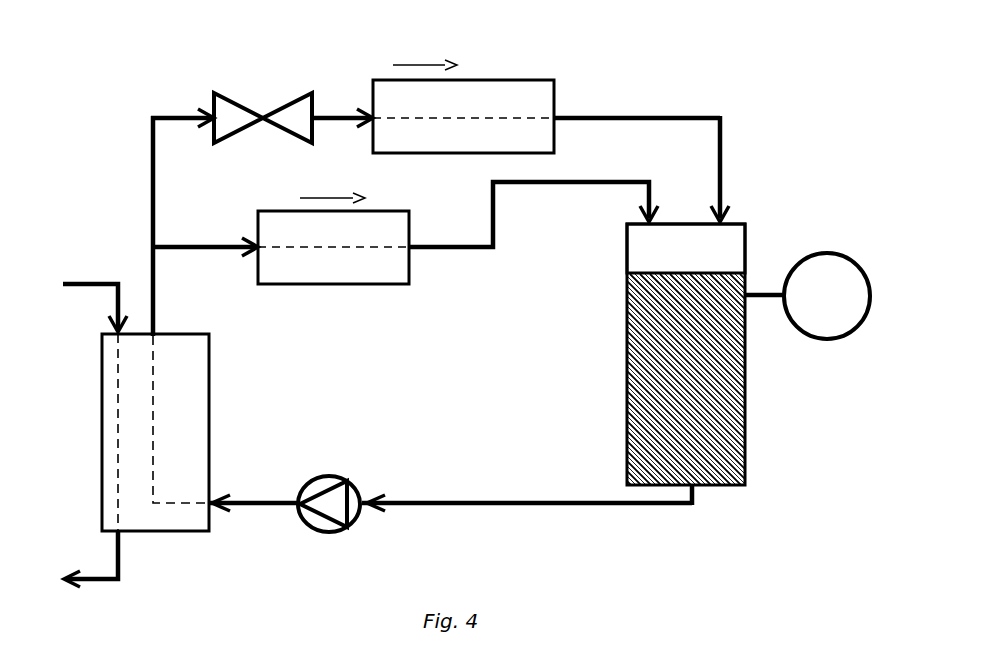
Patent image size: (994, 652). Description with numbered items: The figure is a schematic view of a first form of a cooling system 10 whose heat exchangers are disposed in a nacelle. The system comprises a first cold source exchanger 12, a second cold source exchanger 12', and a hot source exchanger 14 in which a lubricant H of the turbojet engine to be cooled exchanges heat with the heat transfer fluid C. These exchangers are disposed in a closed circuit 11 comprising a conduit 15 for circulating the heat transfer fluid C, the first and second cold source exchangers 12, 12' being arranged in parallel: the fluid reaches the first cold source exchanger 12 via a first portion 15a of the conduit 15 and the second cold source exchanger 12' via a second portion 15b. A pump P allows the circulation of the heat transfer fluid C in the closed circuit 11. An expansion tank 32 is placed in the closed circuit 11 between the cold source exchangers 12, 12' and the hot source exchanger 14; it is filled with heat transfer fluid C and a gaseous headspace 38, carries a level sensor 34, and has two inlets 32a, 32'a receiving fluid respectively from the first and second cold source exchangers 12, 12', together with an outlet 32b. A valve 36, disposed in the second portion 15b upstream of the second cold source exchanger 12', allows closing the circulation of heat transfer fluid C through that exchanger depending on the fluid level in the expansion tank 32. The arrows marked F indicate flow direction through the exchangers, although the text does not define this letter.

The cooling system 10 is at (107, 92).
The closed circuit 11 is at (551, 507).
The first cold source exchanger 12 is at (458, 258).
The second cold source exchanger 12' is at (551, 127).
The hot source exchanger 14 is at (100, 390).
The conduit 15 is at (157, 297).
The first portion of the circulation conduit 15a is at (178, 245).
The second portion of the circulation conduit 15b is at (170, 115).
The expansion tank 32 is at (685, 359).
The inlet 32a is at (640, 220).
The inlet 32'a is at (767, 194).
The outlet 32b is at (697, 494).
The level sensor 34 is at (862, 270).
The valve 36 is at (234, 94).
The gaseous headspace 38 is at (742, 262).
The heat transfer fluid C is at (151, 260).
The lubricant H is at (95, 282).
The fluid flow F is at (431, 62).
The pump P is at (334, 478).